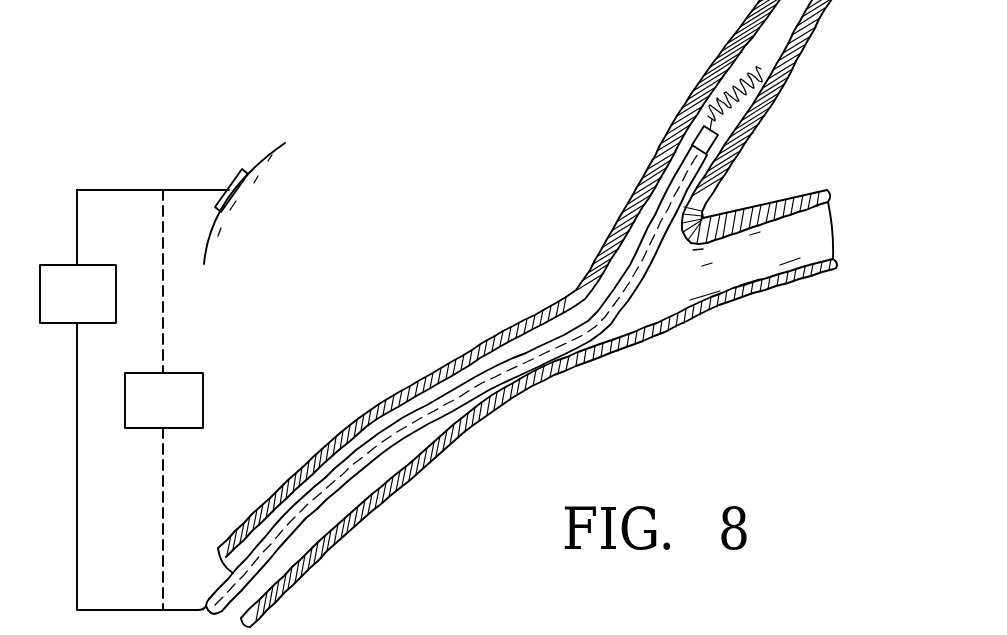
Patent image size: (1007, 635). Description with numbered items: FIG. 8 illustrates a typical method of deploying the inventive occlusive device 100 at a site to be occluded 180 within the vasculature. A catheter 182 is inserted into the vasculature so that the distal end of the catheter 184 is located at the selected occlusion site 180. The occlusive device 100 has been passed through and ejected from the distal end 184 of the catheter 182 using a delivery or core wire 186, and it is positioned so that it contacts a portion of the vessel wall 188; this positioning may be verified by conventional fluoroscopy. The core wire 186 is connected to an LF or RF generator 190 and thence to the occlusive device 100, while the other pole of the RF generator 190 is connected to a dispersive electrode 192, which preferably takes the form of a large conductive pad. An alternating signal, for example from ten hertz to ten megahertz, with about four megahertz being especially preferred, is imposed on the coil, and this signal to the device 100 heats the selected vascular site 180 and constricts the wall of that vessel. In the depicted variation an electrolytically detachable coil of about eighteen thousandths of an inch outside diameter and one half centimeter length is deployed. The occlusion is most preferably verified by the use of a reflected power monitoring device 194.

The occlusive device 100 is at (756, 115).
The site to be occluded 180 is at (708, 49).
The catheter 182 is at (461, 412).
The distal end of the catheter 184 is at (703, 136).
The core wire 186 is at (356, 535).
The vessel wall 188 is at (790, 82).
The RF generator 190 is at (123, 400).
The dispersive electrode 192 is at (240, 168).
The reflected power monitoring device 194 is at (164, 400).